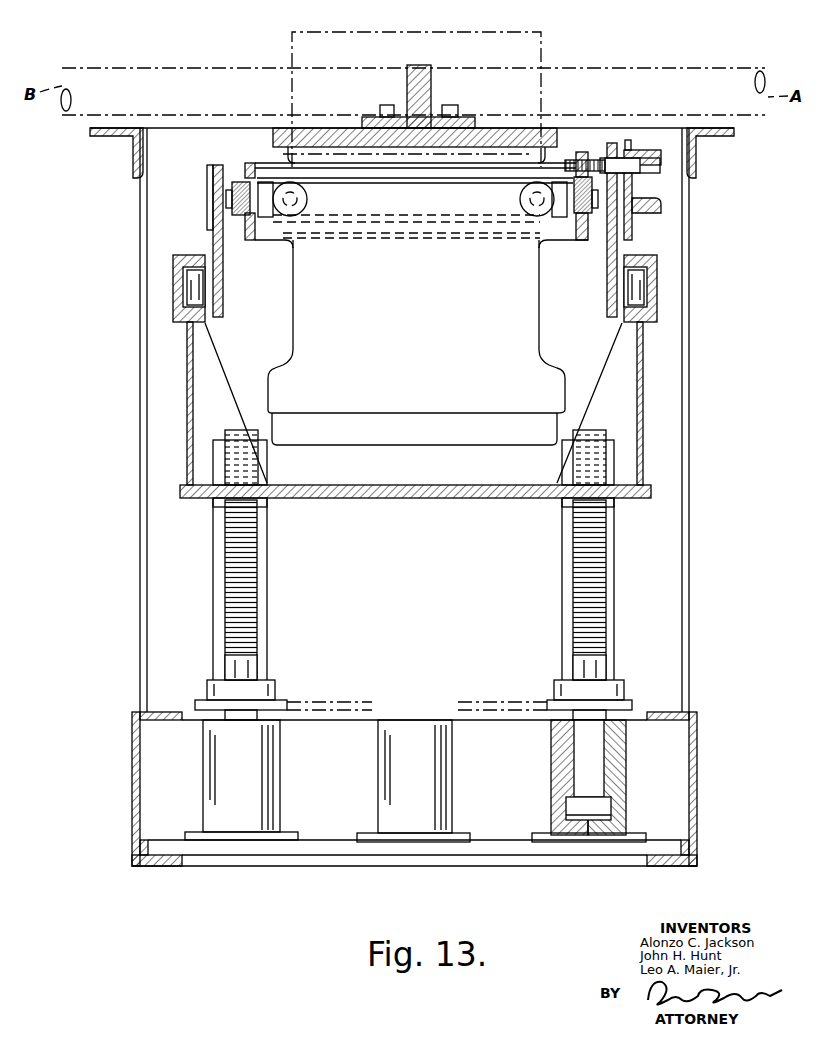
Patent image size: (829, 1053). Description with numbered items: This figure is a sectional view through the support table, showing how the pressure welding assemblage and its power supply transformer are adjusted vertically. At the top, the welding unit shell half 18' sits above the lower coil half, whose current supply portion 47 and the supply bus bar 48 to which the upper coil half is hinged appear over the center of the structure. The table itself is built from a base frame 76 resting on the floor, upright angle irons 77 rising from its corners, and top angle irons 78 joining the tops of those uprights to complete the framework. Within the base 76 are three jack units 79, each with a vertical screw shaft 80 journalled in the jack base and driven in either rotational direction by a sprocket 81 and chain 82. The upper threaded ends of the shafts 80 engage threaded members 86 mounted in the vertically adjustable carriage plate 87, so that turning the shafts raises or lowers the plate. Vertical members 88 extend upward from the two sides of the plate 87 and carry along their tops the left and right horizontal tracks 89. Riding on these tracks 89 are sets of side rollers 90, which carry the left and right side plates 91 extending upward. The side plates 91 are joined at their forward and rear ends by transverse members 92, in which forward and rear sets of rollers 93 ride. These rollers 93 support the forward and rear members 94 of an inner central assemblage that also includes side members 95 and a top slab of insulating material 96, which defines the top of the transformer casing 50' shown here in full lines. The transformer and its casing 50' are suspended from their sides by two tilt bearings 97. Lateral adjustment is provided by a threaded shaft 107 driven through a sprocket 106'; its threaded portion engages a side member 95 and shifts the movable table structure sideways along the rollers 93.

The welding unit shell half 18' is at (416, 85).
The current supply portion 47 is at (405, 96).
The supply bus bar 48 is at (432, 97).
The transformer casing 50' is at (411, 342).
The base frame 76 is at (132, 798).
The upright angle irons 77 is at (140, 430).
The top angle irons 78 is at (133, 152).
The jack units 79 is at (280, 786).
The vertical screw shaft 80 is at (258, 568).
The sprocket 81 is at (207, 693).
The chain 82 is at (525, 700).
The threaded members 86 is at (270, 461).
The carriage plate 87 is at (405, 485).
The vertical members 88 is at (187, 380).
The horizontal tracks 89 is at (173, 310).
The side rollers 90 is at (186, 255).
The side plates 91 is at (223, 270).
The transverse members 92 is at (230, 165).
The rollers 93 is at (308, 196).
The forward and rear members 94 is at (438, 222).
The side members 95 is at (292, 236).
The top slab of insulating material 96 is at (503, 127).
The tilt bearings 97 is at (232, 197).
The sprocket 106' is at (648, 120).
The shaft 107 is at (600, 164).